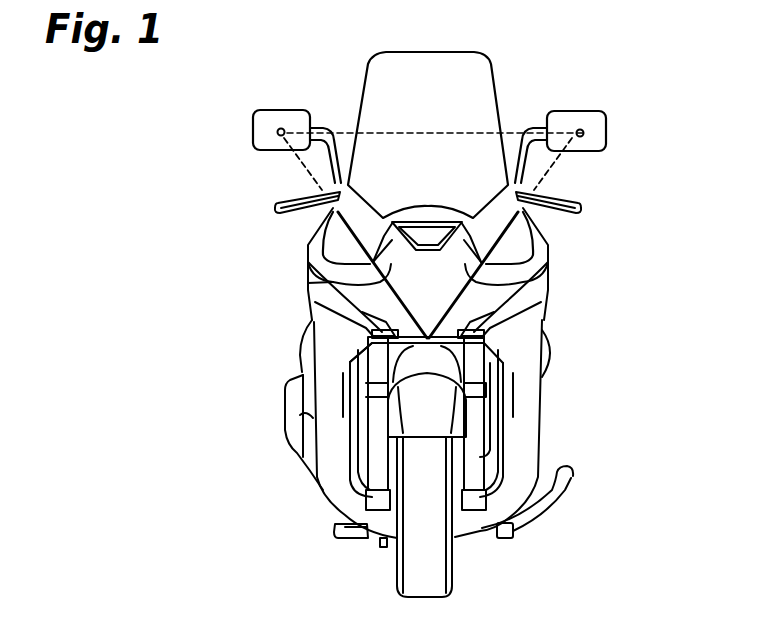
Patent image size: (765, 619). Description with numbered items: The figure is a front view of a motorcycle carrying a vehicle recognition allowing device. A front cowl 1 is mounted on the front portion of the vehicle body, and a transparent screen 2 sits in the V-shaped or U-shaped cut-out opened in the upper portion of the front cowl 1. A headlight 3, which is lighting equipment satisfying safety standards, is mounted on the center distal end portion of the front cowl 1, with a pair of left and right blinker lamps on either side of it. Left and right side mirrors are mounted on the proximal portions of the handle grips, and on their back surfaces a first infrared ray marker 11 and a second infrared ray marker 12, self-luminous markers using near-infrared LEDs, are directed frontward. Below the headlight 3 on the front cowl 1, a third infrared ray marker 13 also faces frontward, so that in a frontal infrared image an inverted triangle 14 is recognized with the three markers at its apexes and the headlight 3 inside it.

The front cowl 1 is at (546, 305).
The transparent screen 2 is at (495, 83).
The headlight 3 is at (540, 289).
The first infrared ray marker 11 is at (581, 129).
The second infrared ray marker 12 is at (281, 128).
The third infrared ray marker 13 is at (352, 359).
The inverted triangle 14 is at (308, 283).